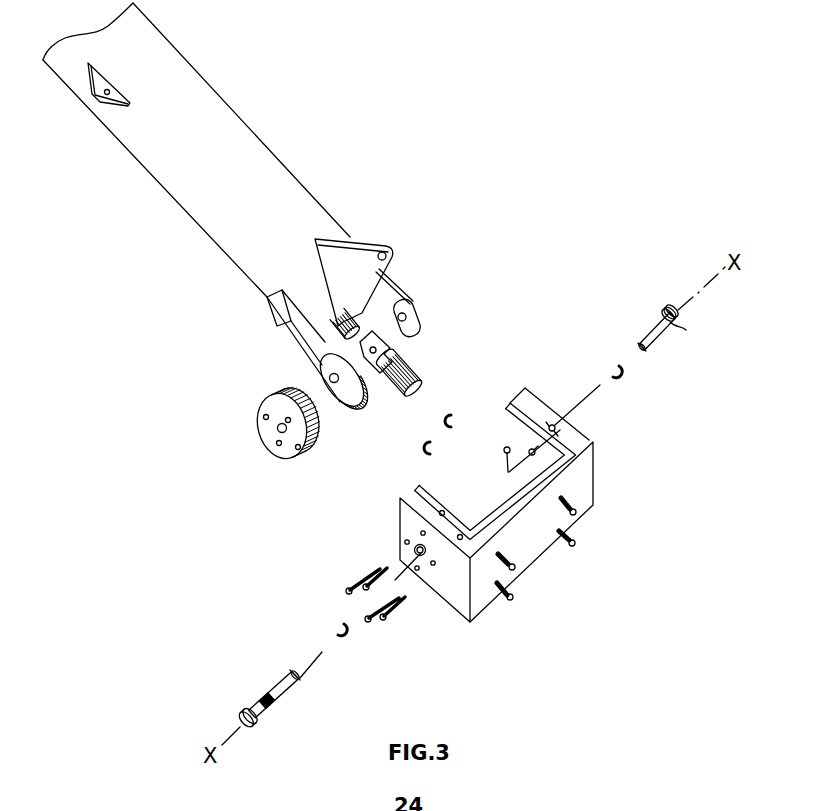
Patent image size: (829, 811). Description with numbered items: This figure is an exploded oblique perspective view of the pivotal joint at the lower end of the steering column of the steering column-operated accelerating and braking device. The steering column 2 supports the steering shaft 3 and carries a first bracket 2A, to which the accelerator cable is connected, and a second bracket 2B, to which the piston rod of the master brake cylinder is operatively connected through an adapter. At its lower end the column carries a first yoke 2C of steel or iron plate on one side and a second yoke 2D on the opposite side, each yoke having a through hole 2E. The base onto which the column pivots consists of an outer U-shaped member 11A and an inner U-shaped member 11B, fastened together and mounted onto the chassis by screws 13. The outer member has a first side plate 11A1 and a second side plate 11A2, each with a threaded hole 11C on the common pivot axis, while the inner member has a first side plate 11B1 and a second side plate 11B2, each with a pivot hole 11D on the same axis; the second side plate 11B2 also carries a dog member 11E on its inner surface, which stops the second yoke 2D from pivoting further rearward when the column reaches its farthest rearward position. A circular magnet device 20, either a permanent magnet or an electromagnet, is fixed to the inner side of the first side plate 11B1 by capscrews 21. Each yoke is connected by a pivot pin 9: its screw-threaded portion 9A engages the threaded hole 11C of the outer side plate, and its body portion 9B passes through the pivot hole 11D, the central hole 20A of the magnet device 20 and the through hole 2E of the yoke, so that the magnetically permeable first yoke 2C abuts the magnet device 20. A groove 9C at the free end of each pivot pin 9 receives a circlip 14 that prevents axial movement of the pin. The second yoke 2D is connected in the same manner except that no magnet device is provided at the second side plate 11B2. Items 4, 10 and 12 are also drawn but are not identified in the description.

The steering column 2 is at (260, 170).
The first bracket 2A is at (97, 104).
The second bracket 2B is at (370, 270).
The first yoke 2C is at (355, 408).
The second yoke 2D is at (422, 315).
The through hole 2E is at (417, 315).
The steering shaft 3 is at (363, 320).
The drive shaft 4 is at (415, 373).
The pivot pin 9 is at (683, 315).
The screw-threaded portion 9A is at (675, 327).
The body portion 9B is at (663, 320).
The groove 9C is at (648, 349).
The retaining clip 10 is at (612, 363).
The outer U-shaped member 11A is at (590, 491).
The first side plate 11A1 is at (405, 521).
The second side plate 11A2 is at (526, 388).
The inner U-shaped member 11B is at (596, 443).
The first side plate 11B1 is at (437, 492).
The second side plate 11B2 is at (508, 404).
The threaded hole 11C is at (553, 425).
The pivot hole 11D is at (529, 450).
The dog member 11E is at (504, 450).
The coupling clip 12 is at (390, 350).
The screws 13 is at (573, 546).
The circlip 14 is at (441, 428).
The magnet device 20 is at (271, 393).
The central hole 20A is at (277, 433).
The capscrews 21 is at (397, 613).